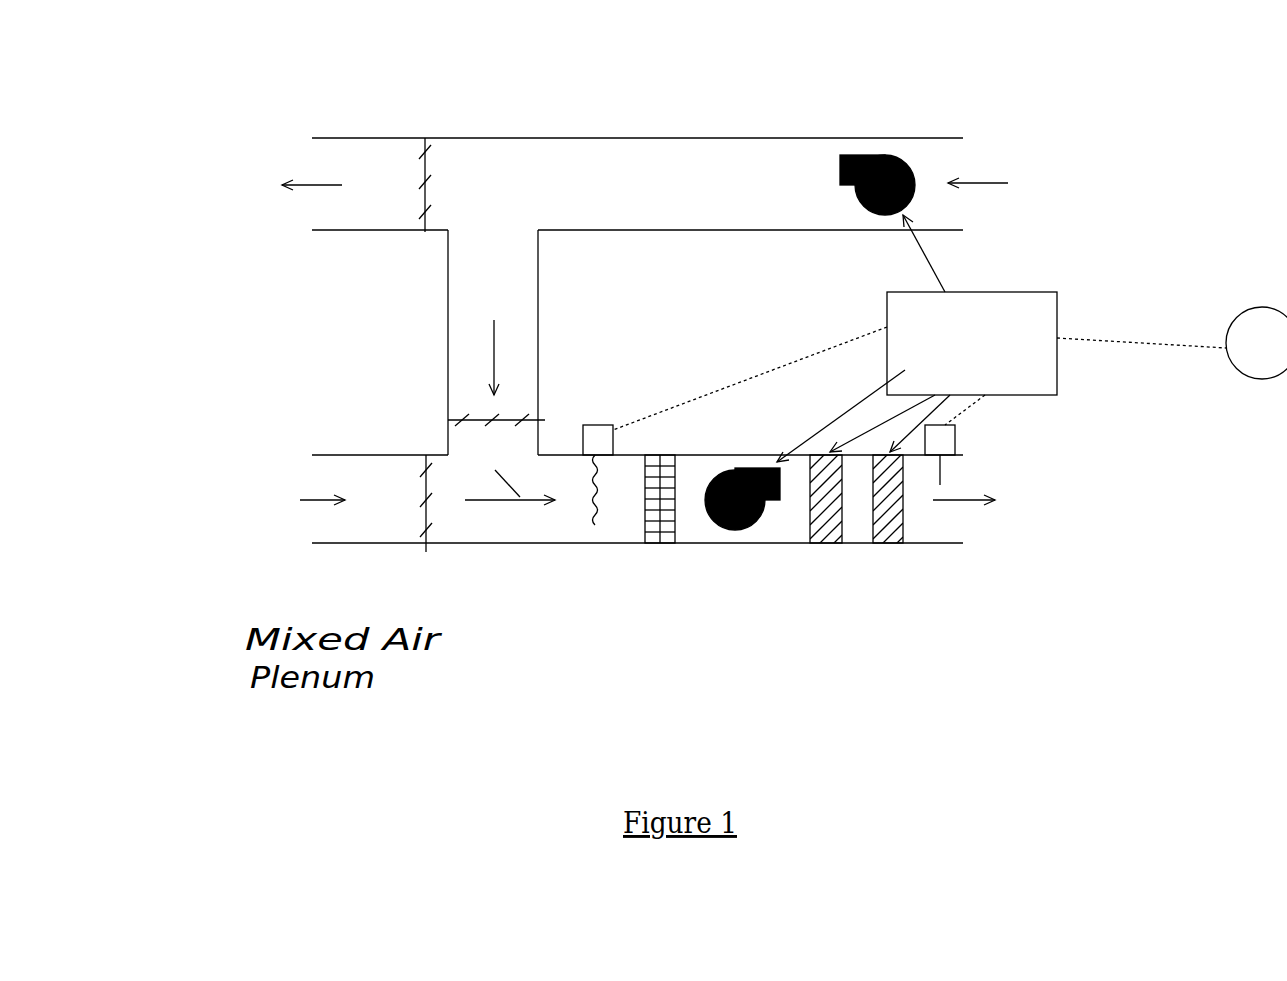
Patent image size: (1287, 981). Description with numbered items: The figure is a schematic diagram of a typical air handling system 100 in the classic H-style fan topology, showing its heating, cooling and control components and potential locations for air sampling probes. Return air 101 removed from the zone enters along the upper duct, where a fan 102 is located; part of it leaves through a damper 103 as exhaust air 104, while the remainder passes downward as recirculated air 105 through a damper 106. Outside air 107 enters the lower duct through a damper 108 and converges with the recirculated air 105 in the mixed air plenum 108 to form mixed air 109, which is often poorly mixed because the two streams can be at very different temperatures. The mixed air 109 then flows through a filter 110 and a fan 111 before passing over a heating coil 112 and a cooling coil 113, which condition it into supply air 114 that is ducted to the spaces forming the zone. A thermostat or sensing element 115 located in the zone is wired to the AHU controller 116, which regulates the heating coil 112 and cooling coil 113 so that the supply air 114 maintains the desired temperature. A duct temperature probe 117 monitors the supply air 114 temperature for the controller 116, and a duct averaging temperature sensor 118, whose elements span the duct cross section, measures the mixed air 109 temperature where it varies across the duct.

The air handling system 100 is at (637, 272).
The return air 101 is at (1078, 199).
The return fan 102 is at (890, 135).
The exhaust air damper 103 is at (437, 137).
The exhaust air 104 is at (206, 199).
The recirculated air 105 is at (503, 360).
The recirculation damper 106 is at (448, 410).
The outside air 107 is at (207, 514).
The mixed air plenum 108 is at (418, 560).
The mixed air 109 is at (510, 513).
The filter 110 is at (660, 545).
The supply fan 111 is at (765, 462).
The heating coil 112 is at (825, 545).
The cooling coil 113 is at (890, 545).
The supply air 114 is at (1063, 514).
The thermostat or sensing element 115 is at (1235, 307).
The AHU controller 116 is at (919, 338).
The duct temperature probe 117 is at (958, 443).
The duct averaging temperature sensor 118 is at (615, 438).